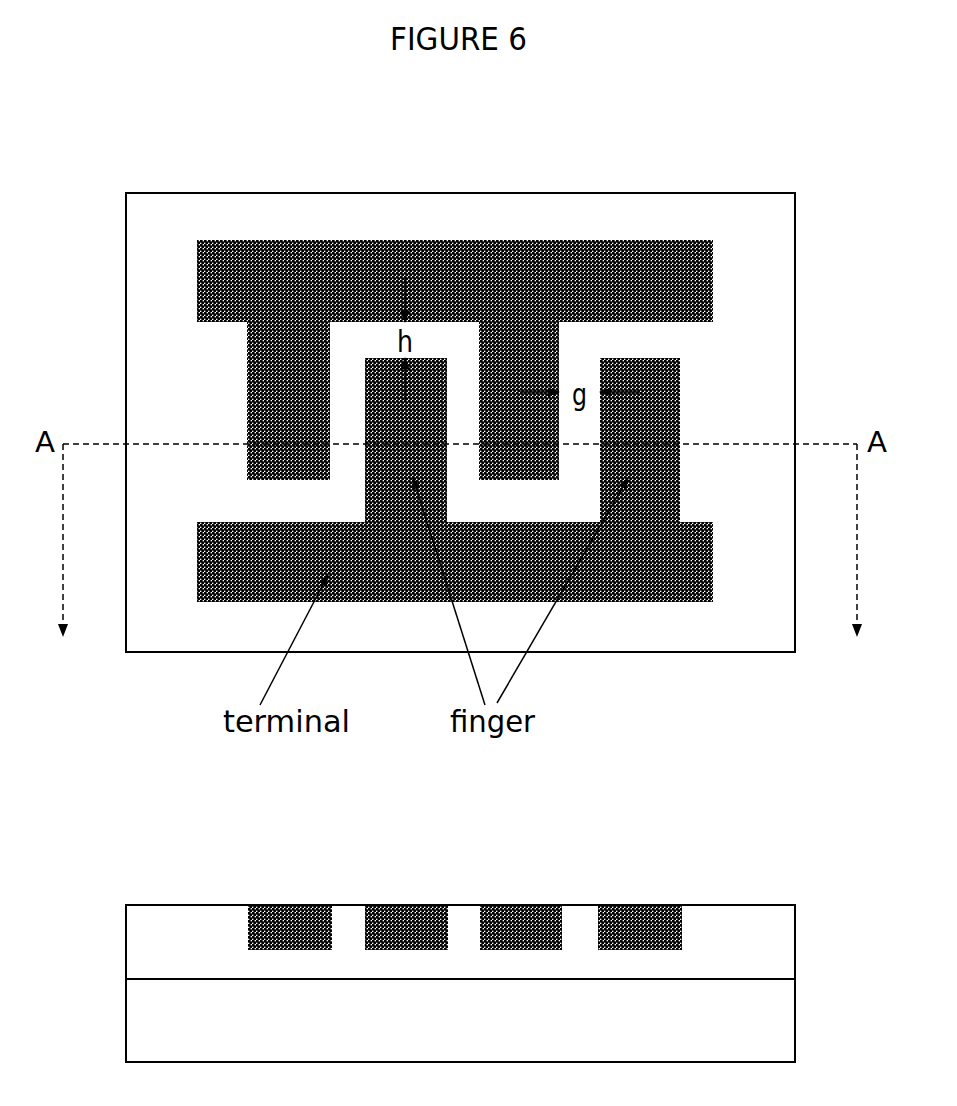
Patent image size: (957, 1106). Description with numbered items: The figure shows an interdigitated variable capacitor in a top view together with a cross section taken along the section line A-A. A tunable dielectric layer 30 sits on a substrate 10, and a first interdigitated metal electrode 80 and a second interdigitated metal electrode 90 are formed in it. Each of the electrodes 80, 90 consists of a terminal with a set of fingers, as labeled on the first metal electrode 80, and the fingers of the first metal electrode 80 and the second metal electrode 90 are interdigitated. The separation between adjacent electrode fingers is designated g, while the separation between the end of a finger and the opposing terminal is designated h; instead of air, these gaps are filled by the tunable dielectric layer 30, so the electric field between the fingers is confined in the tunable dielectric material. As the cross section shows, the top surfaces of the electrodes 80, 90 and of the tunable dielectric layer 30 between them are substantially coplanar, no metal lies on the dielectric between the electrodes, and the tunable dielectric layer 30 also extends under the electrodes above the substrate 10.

The substrate 10 is at (171, 1050).
The tunable dielectric layer 30 is at (167, 628).
The first interdigitated metal electrode 80 is at (653, 569).
The second interdigitated metal electrode 90 is at (656, 294).